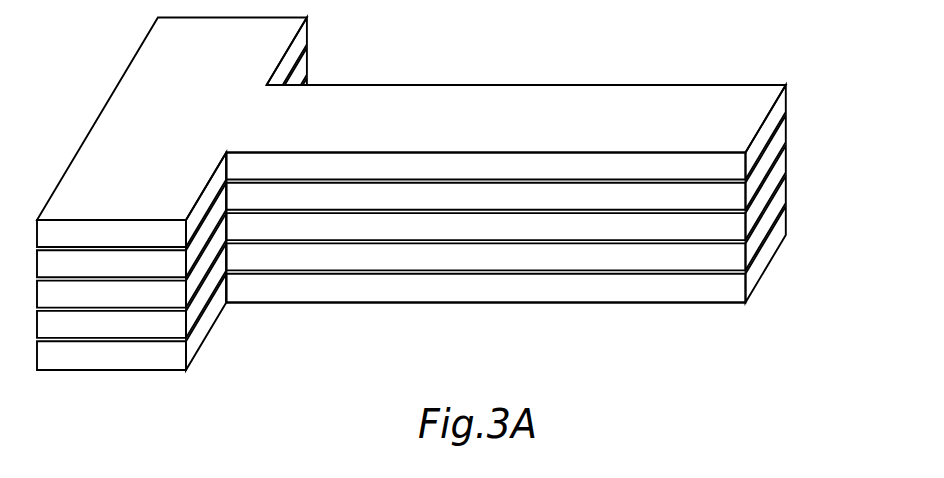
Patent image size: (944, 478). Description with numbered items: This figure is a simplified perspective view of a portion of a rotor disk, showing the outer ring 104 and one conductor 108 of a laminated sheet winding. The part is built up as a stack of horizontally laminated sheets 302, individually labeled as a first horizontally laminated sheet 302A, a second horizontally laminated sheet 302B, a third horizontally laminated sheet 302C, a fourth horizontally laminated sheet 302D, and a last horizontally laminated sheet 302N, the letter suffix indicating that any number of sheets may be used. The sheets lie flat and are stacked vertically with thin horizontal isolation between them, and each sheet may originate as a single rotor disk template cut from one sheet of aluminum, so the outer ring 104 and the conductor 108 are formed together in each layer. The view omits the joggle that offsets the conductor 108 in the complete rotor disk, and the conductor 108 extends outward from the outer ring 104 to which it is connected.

The outer ring 104 is at (127, 97).
The conductor 108 is at (498, 90).
The horizontally laminated sheets 302 is at (783, 75).
The horizontally laminated sheet 302A is at (713, 178).
The horizontally laminated sheet 302B is at (713, 208).
The horizontally laminated sheet 302C is at (713, 238).
The horizontally laminated sheet 302D is at (713, 268).
The horizontally laminated sheet 302N is at (713, 299).